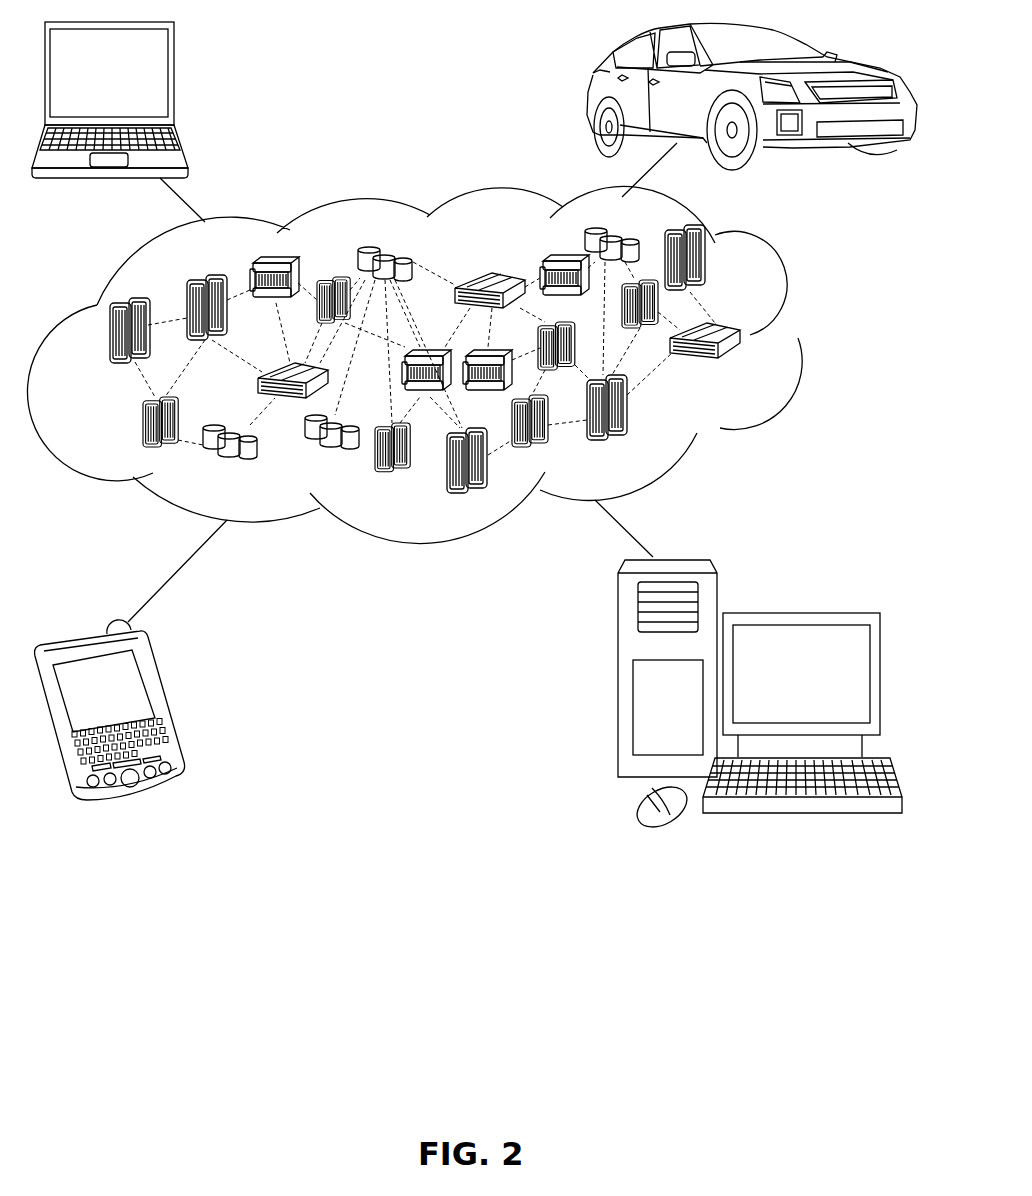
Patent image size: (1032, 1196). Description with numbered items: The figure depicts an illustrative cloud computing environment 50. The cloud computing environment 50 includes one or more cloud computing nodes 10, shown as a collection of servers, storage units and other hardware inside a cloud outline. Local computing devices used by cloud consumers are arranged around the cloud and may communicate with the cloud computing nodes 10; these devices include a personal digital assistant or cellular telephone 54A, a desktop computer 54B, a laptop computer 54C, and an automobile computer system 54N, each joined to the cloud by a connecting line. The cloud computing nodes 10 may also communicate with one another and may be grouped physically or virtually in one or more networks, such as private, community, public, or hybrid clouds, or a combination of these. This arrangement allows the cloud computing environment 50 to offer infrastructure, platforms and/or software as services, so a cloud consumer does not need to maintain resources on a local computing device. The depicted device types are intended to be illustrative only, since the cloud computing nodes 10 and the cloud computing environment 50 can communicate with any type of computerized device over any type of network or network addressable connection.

The cloud computing environment 50 is at (441, 365).
The cloud computing nodes 10 is at (750, 370).
The personal digital assistant or cellular telephone 54A is at (167, 702).
The desktop computer 54B is at (797, 612).
The laptop computer 54C is at (176, 82).
The automobile computer system 54N is at (590, 97).